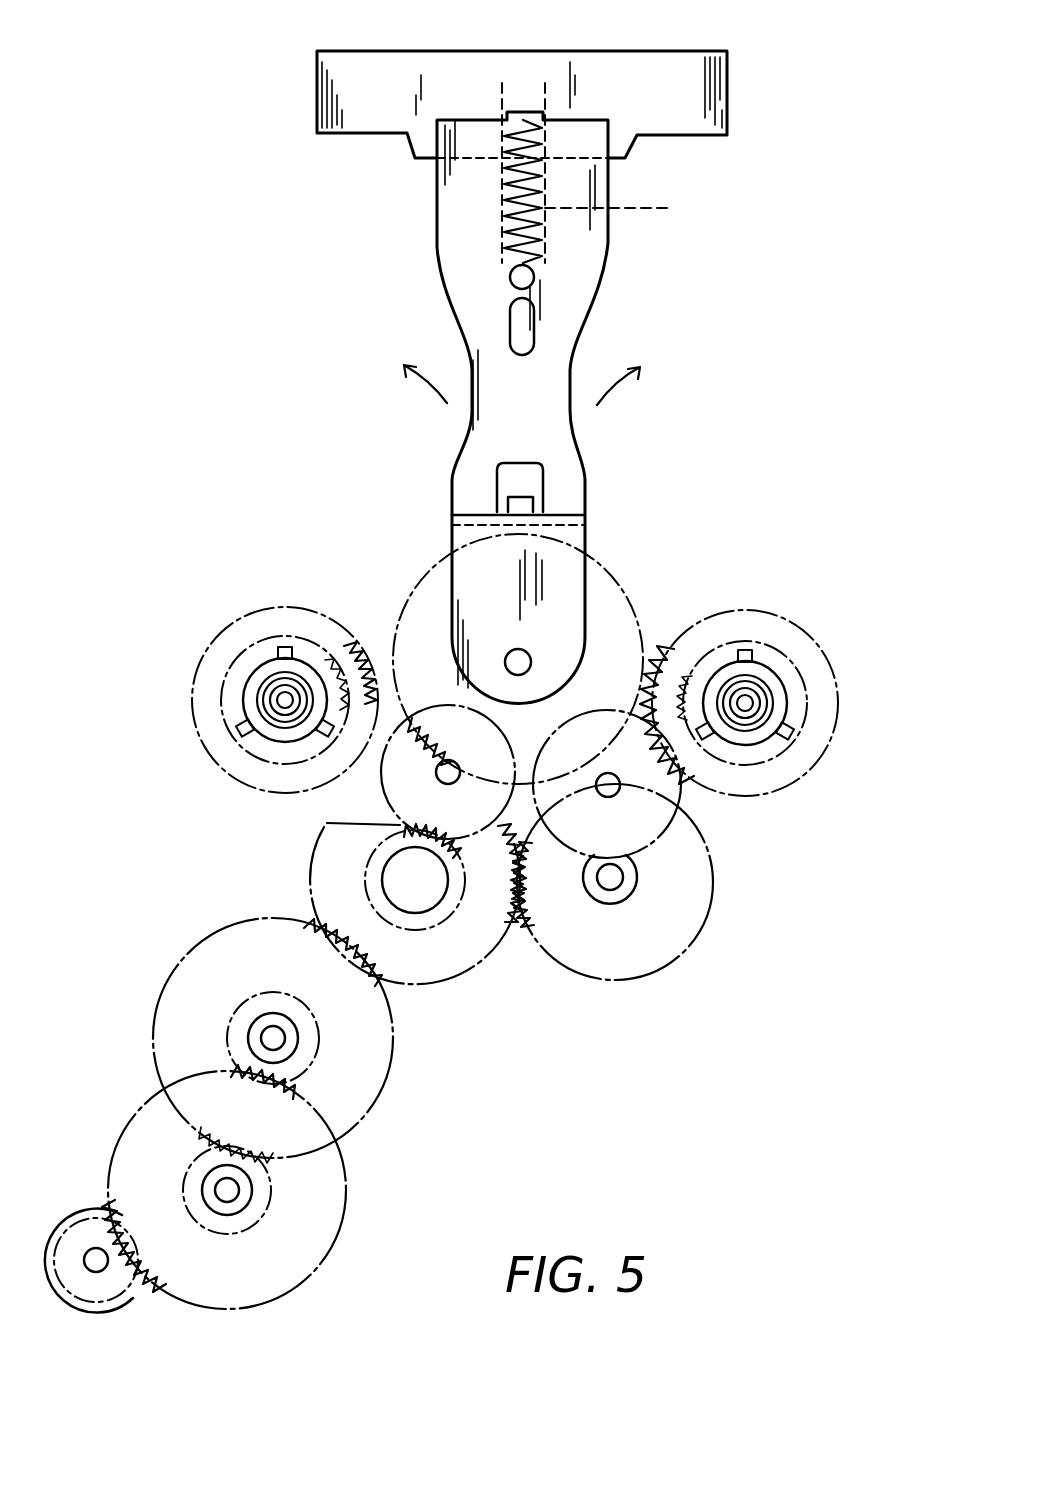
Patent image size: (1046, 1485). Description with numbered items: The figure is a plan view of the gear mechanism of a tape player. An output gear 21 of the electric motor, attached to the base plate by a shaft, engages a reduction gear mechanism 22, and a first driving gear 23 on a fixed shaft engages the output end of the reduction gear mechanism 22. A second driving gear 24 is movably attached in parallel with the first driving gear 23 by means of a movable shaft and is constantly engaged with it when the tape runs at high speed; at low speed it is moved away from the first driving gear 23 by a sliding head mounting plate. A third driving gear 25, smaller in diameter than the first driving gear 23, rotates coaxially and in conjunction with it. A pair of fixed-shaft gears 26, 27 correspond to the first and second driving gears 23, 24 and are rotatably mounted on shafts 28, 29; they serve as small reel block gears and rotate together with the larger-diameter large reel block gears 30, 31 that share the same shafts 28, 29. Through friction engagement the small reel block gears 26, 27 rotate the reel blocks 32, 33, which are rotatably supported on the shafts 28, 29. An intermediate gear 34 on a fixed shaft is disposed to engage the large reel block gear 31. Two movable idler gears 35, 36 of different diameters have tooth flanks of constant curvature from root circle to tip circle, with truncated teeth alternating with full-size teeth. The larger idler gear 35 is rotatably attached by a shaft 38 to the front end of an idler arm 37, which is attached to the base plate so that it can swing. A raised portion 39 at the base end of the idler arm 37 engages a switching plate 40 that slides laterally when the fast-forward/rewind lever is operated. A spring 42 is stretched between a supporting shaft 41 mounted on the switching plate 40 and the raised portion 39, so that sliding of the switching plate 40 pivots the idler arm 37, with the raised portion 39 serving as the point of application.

The output gear 21 is at (115, 1300).
The reduction gear mechanism 22 is at (347, 1172).
The first driving gear 23 is at (308, 874).
The second driving gear 24 is at (645, 975).
The third driving gear 25 is at (400, 827).
The fixed-shaft gear 26 is at (295, 635).
The fixed-shaft gear 27 is at (777, 648).
The shaft 28 is at (283, 697).
The shaft 29 is at (745, 703).
The large reel block gear 30 is at (263, 608).
The large reel block gear 31 is at (835, 732).
The reel block 32 is at (250, 698).
The reel block 33 is at (763, 733).
The intermediate gear 34 is at (640, 715).
The idler gear 35 is at (613, 580).
The idler gear 36 is at (400, 723).
The idler arm 37 is at (577, 257).
The shaft 38 is at (522, 655).
The raised portion 39 is at (518, 110).
The switching plate 40 is at (667, 80).
The supporting shaft 41 is at (530, 283).
The spring 42 is at (624, 203).